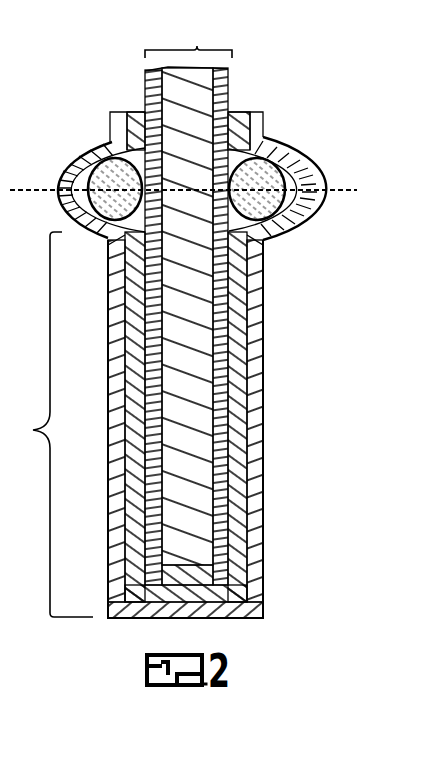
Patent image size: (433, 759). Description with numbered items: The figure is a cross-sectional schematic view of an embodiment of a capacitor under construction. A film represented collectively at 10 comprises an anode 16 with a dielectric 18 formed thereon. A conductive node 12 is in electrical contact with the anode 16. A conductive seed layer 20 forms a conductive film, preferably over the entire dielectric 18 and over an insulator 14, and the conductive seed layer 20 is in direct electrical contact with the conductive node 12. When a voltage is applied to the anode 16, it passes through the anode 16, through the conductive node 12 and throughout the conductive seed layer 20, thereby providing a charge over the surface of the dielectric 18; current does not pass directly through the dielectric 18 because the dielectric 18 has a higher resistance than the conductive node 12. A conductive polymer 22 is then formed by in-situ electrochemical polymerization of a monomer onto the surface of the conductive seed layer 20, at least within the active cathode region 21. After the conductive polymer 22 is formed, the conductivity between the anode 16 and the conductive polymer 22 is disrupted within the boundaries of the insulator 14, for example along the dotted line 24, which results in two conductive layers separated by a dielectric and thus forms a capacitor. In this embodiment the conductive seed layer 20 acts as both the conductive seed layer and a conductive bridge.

The film 10 is at (191, 45).
The conductive node 12 is at (118, 127).
The insulator 14 is at (117, 212).
The anode 16 is at (200, 108).
The dielectric 18 is at (155, 93).
The conductive seed layer 20 is at (237, 358).
The active cathode region 21 is at (50, 424).
The conductive polymer 22 is at (257, 448).
The dotted line 24 is at (338, 188).